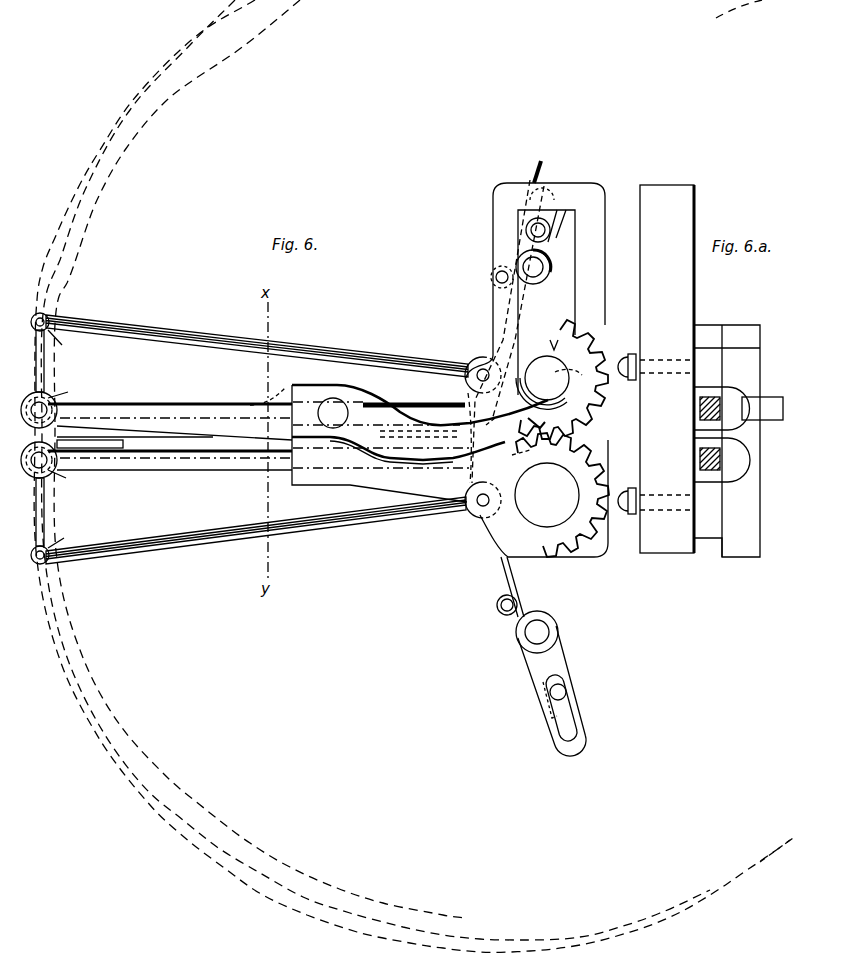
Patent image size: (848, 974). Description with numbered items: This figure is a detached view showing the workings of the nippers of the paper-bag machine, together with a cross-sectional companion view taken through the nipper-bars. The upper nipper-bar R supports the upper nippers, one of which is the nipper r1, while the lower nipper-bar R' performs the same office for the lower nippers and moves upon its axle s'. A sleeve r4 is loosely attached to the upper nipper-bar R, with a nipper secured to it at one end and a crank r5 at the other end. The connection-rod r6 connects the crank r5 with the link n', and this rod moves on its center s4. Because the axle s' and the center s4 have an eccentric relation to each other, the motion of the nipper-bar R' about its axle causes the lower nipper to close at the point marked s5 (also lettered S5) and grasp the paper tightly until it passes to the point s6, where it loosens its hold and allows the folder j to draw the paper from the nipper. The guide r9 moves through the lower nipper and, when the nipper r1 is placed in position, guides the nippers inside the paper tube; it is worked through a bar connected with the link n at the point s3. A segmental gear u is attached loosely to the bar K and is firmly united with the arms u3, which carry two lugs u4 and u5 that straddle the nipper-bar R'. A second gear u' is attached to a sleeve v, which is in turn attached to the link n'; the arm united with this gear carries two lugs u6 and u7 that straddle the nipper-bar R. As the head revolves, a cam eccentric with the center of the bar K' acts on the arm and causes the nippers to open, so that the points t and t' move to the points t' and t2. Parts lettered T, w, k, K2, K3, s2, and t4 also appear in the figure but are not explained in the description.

In FIG. 6, the closing point S5 is at (413, 476).
In FIG. 6, the closing point s5 is at (248, 459).
In FIG. 6, the releasing point s6 is at (375, 470).
In FIG. 6, the arm end t4 is at (775, 839).
In FIG. 6, the point t2 is at (748, 26).
In FIG. 6, the point t' is at (28, 318).
In FIG. 6, the point t is at (31, 556).
In FIG. 6, the crank r5 is at (31, 438).
In FIG. 6, the lower nipper-bar R' is at (147, 443).
In FIG. 6A, the lower nipper-bar R' is at (680, 445).
In FIG. 6, the upper nipper-bar R is at (256, 408).
In FIG. 6, the sleeve r4 is at (63, 439).
In FIG. 6, the connection-rod r6 is at (257, 439).
In FIG. 6, the bar T is at (174, 433).
In FIG. 6, the guide r9 is at (61, 437).
In FIG. 6, the nipper r1 is at (267, 390).
In FIG. 6, the arms u3 is at (420, 443).
In FIG. 6, the roller w is at (333, 413).
In FIG. 6A, the roller w is at (680, 433).
In FIG. 6, the link n' is at (537, 368).
In FIG. 6A, the link n' is at (656, 369).
In FIG. 6, the connection point s3 is at (472, 360).
In FIG. 6, the center s4 is at (478, 515).
In FIG. 6, the bar K is at (562, 379).
In FIG. 6, the bar K' is at (562, 495).
In FIG. 6, the segmental gear u is at (574, 384).
In FIG. 6A, the segmental gear u is at (727, 441).
In FIG. 6, the gear u' is at (587, 521).
In FIG. 6, the sleeve v is at (553, 336).
In FIG. 6, the hook s2 is at (532, 416).
In FIG. 6, the axle s' is at (528, 455).
In FIG. 6, the link n is at (484, 427).
In FIG. 6, the lever K2 is at (542, 236).
In FIG. 6, the lever K3 is at (543, 656).
In FIG. 6, the folder j is at (529, 170).
In FIG. 6, the pin k is at (491, 274).
In FIG. 6A, the lug u6 is at (698, 408).
In FIG. 6A, the lug u4 is at (698, 458).
In FIG. 6A, the lug u5 is at (762, 408).
In FIG. 6A, the lug u7 is at (696, 396).